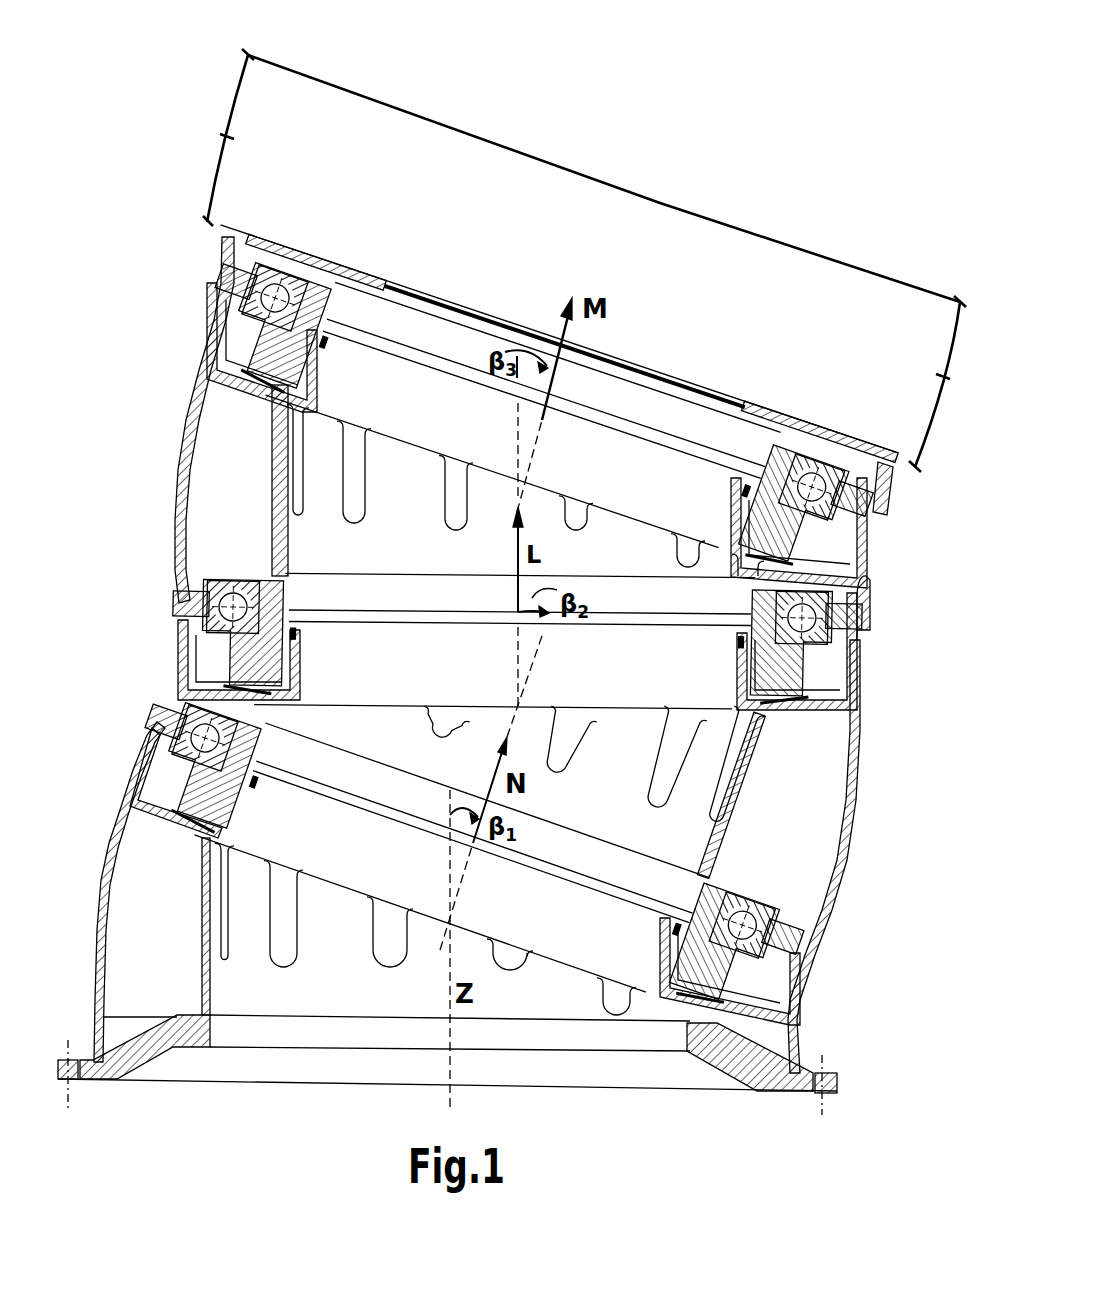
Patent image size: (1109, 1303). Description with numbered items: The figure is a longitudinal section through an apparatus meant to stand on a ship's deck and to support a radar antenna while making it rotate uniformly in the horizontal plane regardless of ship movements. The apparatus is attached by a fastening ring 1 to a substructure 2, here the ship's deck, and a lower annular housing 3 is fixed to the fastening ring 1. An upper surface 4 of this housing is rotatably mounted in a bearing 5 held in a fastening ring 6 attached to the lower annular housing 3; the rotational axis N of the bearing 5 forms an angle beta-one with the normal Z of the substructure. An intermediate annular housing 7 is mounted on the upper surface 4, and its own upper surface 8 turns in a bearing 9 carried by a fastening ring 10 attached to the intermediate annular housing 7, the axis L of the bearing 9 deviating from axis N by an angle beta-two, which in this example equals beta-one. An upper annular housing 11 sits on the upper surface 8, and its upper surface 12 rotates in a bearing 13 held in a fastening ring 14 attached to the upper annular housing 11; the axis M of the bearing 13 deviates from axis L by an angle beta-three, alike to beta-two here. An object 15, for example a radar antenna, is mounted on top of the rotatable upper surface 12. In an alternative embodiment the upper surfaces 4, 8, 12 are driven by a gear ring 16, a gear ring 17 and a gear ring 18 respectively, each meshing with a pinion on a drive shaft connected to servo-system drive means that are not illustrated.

The fastening ring 1 is at (95, 1080).
The substructure 2 is at (283, 1082).
The lower annular housing 3 is at (100, 895).
The upper surface 4 is at (722, 892).
The bearing 5 is at (748, 912).
The fastening ring 6 is at (787, 945).
The intermediate annular housing 7 is at (852, 728).
The upper surface 8 is at (267, 584).
The bearing 9 is at (232, 590).
The fastening ring 10 is at (178, 620).
The upper annular housing 11 is at (178, 439).
The upper surface 12 is at (797, 460).
The bearing 13 is at (822, 468).
The fastening ring 14 is at (857, 515).
The object 15 is at (608, 178).
The gear ring 16 is at (222, 803).
The gear ring 17 is at (268, 668).
The gear ring 18 is at (287, 368).